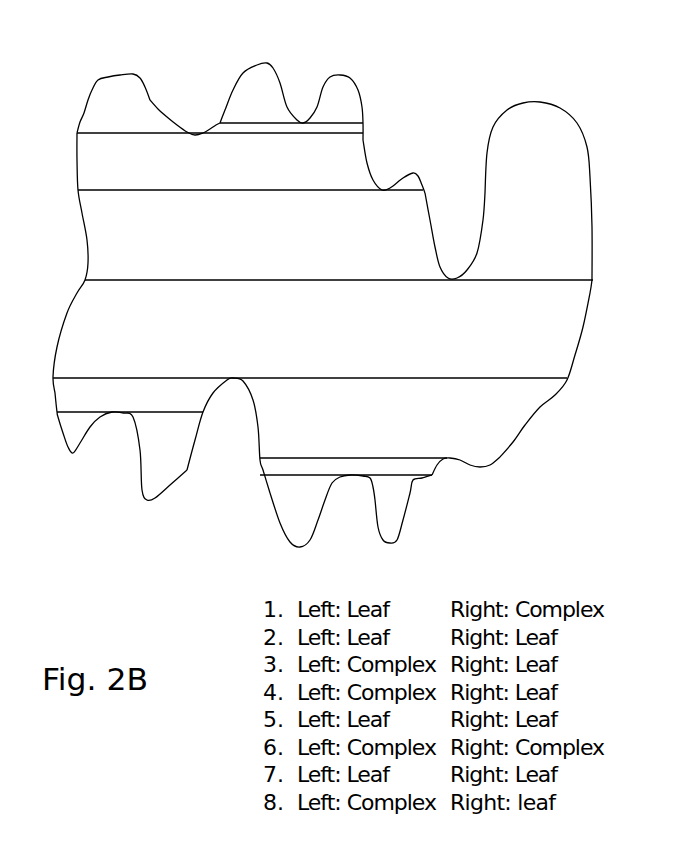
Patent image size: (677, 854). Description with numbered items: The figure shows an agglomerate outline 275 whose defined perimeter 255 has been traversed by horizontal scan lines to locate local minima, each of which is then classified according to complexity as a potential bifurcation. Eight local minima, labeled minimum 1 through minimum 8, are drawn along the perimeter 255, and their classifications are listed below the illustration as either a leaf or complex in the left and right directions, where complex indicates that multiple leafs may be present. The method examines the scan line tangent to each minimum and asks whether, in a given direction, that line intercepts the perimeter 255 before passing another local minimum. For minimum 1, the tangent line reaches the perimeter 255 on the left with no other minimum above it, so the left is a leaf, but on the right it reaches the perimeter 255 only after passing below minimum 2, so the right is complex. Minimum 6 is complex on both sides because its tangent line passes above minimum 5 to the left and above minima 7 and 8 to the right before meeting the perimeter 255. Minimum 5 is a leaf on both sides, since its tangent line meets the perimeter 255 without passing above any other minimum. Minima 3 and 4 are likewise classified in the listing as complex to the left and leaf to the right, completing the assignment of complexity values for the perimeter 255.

The surface profile 275 is at (196, 56).
The perimeter 255 is at (508, 106).
The minimum 1 is at (185, 131).
The minimum 2 is at (291, 112).
The minimum 3 is at (394, 182).
The minimum 4 is at (455, 252).
The minimum 5 is at (129, 440).
The minimum 6 is at (228, 421).
The minimum 7 is at (346, 492).
The minimum 8 is at (380, 451).